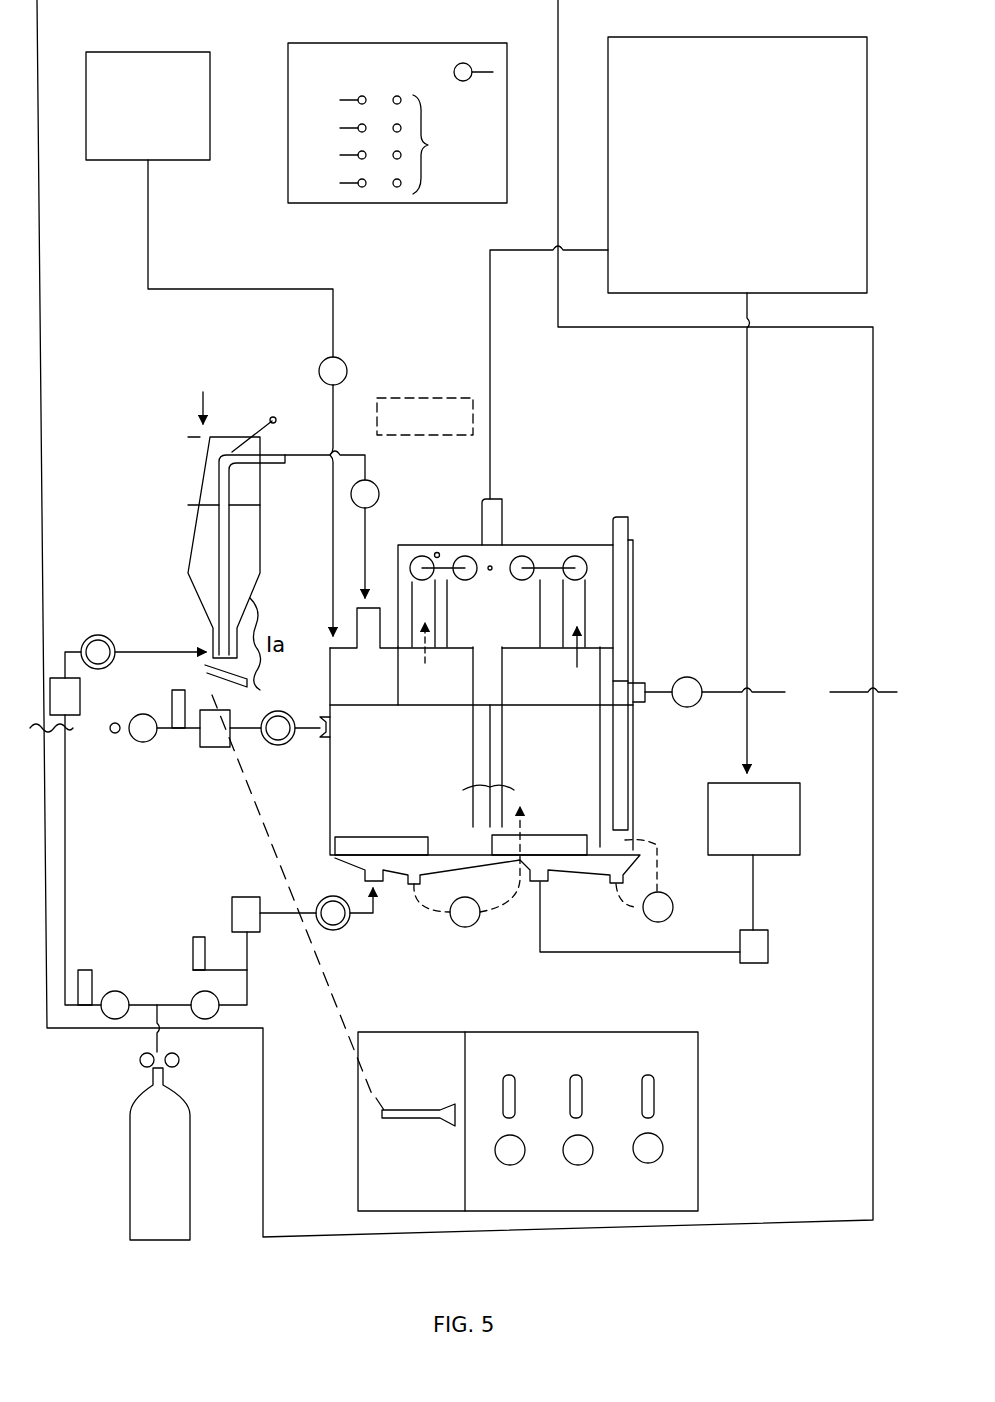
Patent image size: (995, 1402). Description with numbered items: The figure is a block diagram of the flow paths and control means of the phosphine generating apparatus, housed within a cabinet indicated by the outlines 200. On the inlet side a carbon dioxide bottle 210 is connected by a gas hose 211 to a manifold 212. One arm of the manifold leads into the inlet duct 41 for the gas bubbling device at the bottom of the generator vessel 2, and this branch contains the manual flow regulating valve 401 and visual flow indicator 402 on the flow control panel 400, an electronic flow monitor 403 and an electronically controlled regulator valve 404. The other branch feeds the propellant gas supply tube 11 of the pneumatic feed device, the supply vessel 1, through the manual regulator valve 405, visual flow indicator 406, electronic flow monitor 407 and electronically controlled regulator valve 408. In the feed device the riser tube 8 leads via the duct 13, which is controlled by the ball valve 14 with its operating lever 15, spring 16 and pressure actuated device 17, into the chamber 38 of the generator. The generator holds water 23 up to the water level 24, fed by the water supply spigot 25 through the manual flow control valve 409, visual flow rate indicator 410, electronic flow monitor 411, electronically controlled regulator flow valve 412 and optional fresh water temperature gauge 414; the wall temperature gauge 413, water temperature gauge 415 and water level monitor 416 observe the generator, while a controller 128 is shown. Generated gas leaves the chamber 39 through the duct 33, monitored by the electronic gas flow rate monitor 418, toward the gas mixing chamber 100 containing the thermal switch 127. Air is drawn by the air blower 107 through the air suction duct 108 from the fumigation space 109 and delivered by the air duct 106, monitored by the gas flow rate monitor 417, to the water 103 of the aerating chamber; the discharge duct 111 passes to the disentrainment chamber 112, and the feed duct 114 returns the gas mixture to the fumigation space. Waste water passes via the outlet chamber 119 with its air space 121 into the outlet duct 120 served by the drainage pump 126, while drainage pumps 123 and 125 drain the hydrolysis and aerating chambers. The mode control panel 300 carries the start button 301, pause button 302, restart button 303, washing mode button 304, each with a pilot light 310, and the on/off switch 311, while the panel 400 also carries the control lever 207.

The supply vessel 1 is at (190, 482).
The generator vessel 2 is at (330, 800).
The riser tube 8 is at (222, 528).
The propellant gas supply tube 11 is at (68, 857).
The duct 13 is at (313, 452).
The ball valve 14 is at (380, 494).
The operating lever 15 is at (425, 434).
The spring 16 is at (425, 434).
The pressure actuated device 17 is at (376, 470).
The water 23 is at (409, 810).
The water level 24 is at (513, 705).
The water supply spigot 25 is at (83, 734).
The duct 33 is at (420, 625).
The chamber 38 is at (366, 679).
The chamber 39 is at (444, 679).
The inlet duct 41 is at (278, 918).
The gas mixing chamber 100 is at (515, 674).
The water 103 is at (556, 771).
The air duct 106 is at (542, 933).
The air blower 107 is at (788, 810).
The air suction duct 108 is at (750, 430).
The fumigation space 109 is at (737, 165).
The discharge duct 111 is at (575, 655).
The disentrainment chamber 112 is at (598, 562).
The feed duct 114 is at (490, 282).
The outlet chamber 119 is at (685, 588).
The outlet duct 120 is at (640, 702).
The air space 121 is at (628, 615).
The drainage pump 123 is at (460, 928).
The drainage pump 125 is at (666, 915).
The drainage pump 126 is at (692, 678).
The thermal switch 127 is at (493, 567).
The controller 128 is at (216, 344).
The cabinet outlines 200 is at (740, 1226).
The control lever 207 is at (422, 1123).
The carbon dioxide bottle 210 is at (160, 1154).
The gas hose 211 is at (163, 1042).
The manifold 212 is at (158, 1000).
The mode control panel 300 is at (397, 123).
The start button 301 is at (334, 101).
The pause button 302 is at (334, 129).
The restart button 303 is at (334, 156).
The washing mode button 304 is at (334, 184).
The pilot light 310 is at (428, 146).
The on/off switch 311 is at (455, 72).
The flow control panel 400 is at (564, 1121).
The manual flow regulating valve 401 is at (219, 1006).
The visual flow indicator 402 is at (193, 941).
The electronic flow monitor 403 is at (251, 896).
The electronically controlled regulator valve 404 is at (340, 928).
The manual regulator valve 405 is at (116, 1026).
The visual flow indicator 406 is at (94, 971).
The electronic flow monitor 407 is at (80, 698).
The electronically controlled regulator valve 408 is at (106, 634).
The manual flow control valve 409 is at (155, 740).
The visual flow rate indicator 410 is at (178, 690).
The electronic flow monitor 411 is at (212, 742).
The electronically controlled regulator flow valve 412 is at (267, 710).
The wall temperature gauge 413 is at (340, 670).
The fresh water temperature gauge 414 is at (303, 735).
The water temperature gauge 415 is at (400, 766).
The water level monitor 416 is at (375, 710).
The gas flow rate monitor 417 is at (770, 955).
The electronic gas flow rate monitor 418 is at (437, 553).